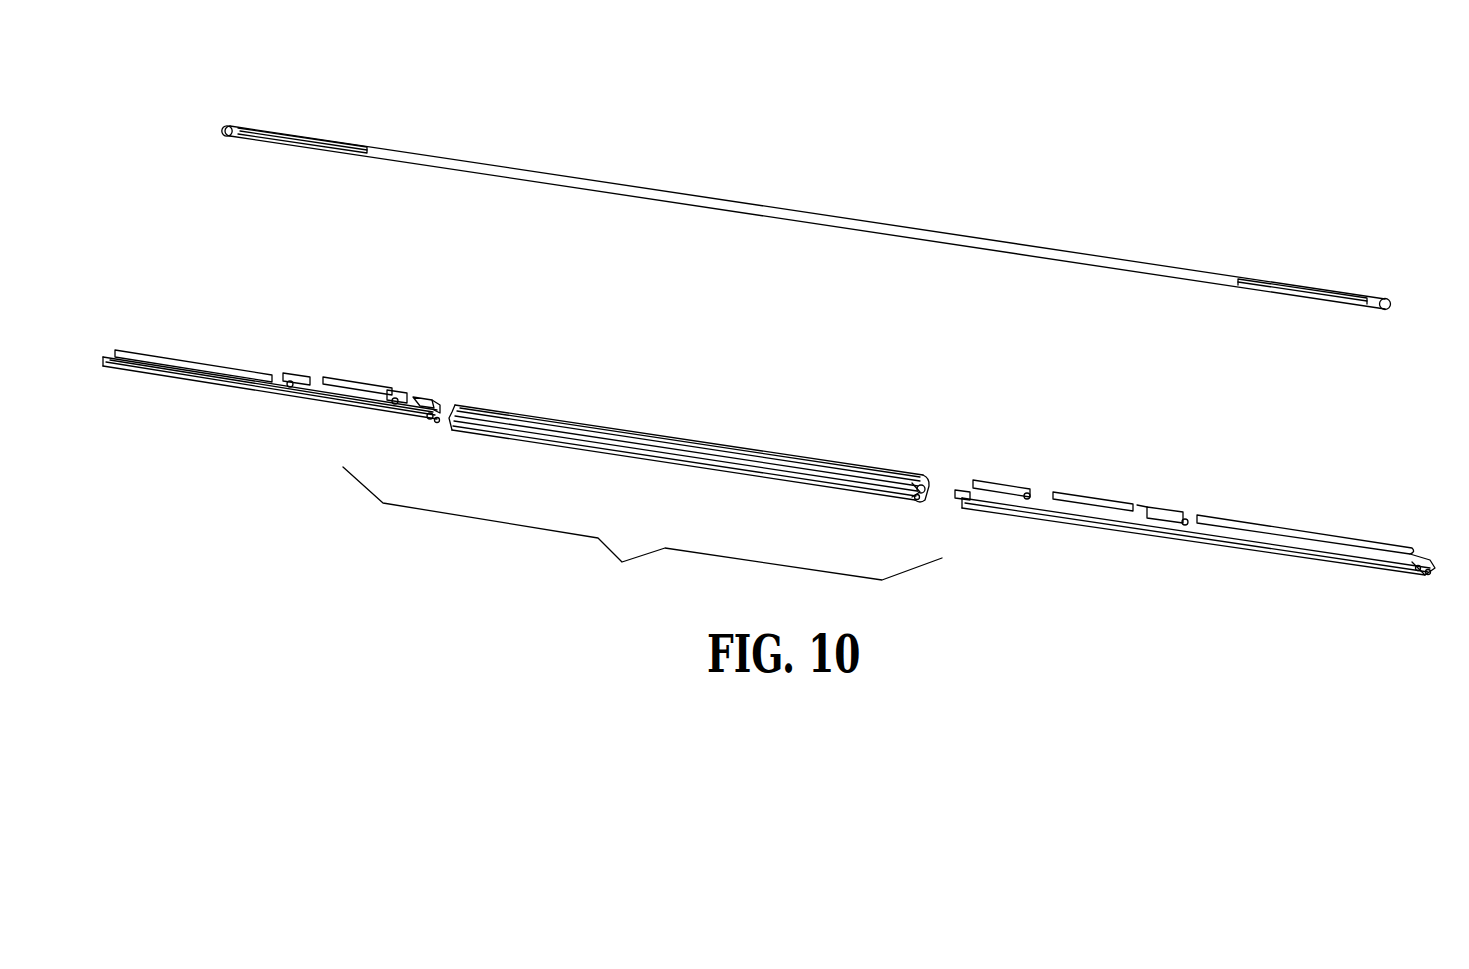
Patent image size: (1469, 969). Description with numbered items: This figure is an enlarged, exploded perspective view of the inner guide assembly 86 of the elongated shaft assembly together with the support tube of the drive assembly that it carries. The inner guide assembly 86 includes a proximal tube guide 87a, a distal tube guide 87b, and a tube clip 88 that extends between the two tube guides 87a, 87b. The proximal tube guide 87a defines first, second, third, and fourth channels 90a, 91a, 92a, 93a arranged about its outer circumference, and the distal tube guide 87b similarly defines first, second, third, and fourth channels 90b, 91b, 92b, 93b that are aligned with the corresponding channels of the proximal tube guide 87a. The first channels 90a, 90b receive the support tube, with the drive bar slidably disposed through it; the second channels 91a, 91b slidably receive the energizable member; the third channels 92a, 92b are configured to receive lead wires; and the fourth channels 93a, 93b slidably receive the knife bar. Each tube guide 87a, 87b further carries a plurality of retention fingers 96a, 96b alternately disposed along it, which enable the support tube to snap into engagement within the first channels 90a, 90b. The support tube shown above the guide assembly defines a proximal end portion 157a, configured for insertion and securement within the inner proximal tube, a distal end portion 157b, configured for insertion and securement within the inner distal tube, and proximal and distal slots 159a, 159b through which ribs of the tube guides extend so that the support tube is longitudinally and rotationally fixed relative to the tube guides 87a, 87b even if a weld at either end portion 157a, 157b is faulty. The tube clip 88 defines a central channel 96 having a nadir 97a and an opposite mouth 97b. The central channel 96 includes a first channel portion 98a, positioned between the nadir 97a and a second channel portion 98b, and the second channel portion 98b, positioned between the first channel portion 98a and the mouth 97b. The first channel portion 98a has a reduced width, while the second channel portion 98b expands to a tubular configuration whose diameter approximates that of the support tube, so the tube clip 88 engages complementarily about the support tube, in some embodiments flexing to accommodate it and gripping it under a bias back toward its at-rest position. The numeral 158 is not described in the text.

The inner guide assembly 86 is at (642, 528).
The proximal tube guide 87a is at (268, 380).
The distal tube guide 87b is at (1243, 532).
The tube clip 88 is at (678, 432).
The first channel 90a is at (425, 400).
The first channel 90b is at (1335, 541).
The second channel 91a is at (438, 407).
The second channel 91b is at (1420, 560).
The third channel 92a is at (436, 424).
The third channel 92b is at (1428, 576).
The fourth channel 93a is at (420, 418).
The fourth channel 93b is at (1412, 572).
The central channel 96 is at (728, 447).
The retention fingers 96a is at (285, 373).
The retention fingers 96b is at (1000, 487).
The nadir 97a is at (917, 496).
The mouth 97b is at (918, 476).
The first channel portion 98a is at (923, 500).
The second channel portion 98b is at (905, 483).
The proximal end portion 157a is at (233, 126).
The distal end portion 157b is at (1381, 297).
The support rod 158 is at (845, 217).
The proximal slot 159a is at (330, 141).
The distal slot 159b is at (1290, 278).